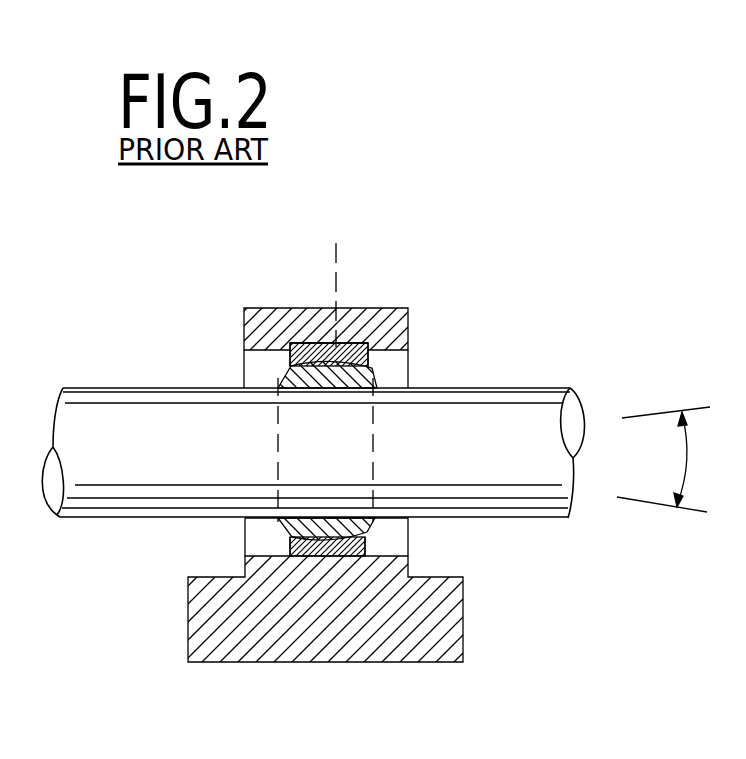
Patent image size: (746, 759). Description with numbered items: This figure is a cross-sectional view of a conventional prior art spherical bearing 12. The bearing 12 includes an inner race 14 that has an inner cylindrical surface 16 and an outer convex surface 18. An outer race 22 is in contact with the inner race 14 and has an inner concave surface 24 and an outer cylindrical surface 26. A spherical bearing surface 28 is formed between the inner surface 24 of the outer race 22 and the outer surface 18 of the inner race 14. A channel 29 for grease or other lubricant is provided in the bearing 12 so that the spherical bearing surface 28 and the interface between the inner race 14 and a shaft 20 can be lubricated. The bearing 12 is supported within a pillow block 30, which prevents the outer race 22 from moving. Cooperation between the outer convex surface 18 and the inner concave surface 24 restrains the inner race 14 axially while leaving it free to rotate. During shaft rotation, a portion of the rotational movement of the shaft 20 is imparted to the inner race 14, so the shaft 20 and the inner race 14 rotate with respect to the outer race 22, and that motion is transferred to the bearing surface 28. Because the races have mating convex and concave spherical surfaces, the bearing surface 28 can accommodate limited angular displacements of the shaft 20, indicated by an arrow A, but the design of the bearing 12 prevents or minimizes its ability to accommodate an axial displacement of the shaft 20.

The spherical bearing 12 is at (382, 292).
The inner race 14 is at (318, 370).
The inner cylindrical surface 16 is at (292, 382).
The outer convex surface 18 is at (285, 363).
The shaft 20 is at (518, 413).
The outer race 22 is at (352, 542).
The inner concave surface 24 is at (359, 370).
The outer cylindrical surface 26 is at (378, 349).
The spherical bearing surface 28 is at (305, 348).
The channel 29 is at (341, 280).
The pillow block 30 is at (428, 614).
The arrow A is at (663, 459).